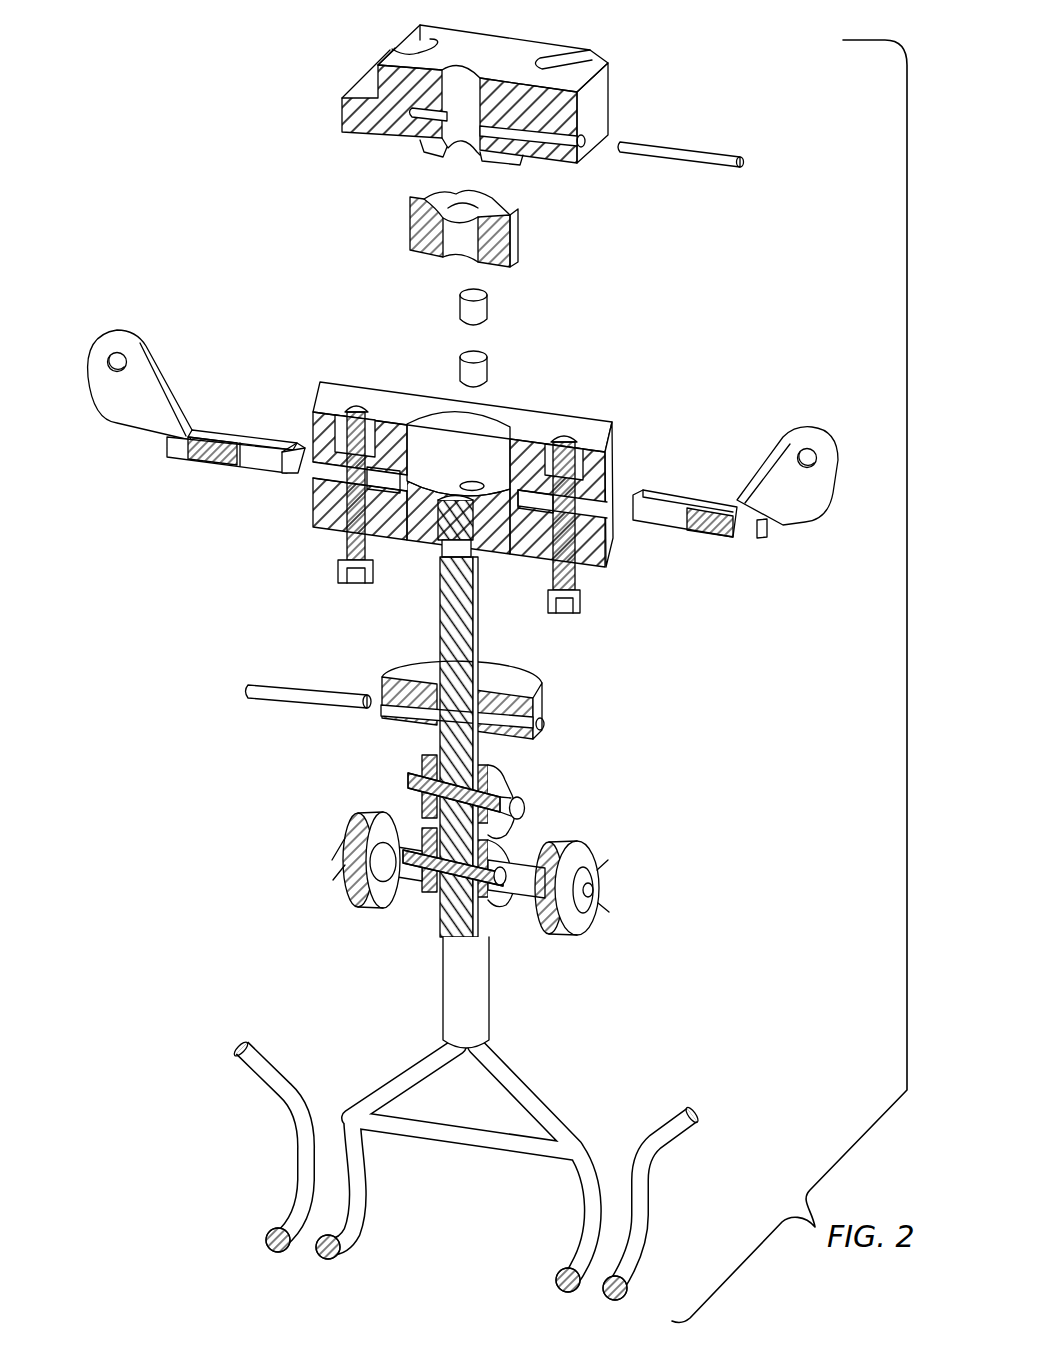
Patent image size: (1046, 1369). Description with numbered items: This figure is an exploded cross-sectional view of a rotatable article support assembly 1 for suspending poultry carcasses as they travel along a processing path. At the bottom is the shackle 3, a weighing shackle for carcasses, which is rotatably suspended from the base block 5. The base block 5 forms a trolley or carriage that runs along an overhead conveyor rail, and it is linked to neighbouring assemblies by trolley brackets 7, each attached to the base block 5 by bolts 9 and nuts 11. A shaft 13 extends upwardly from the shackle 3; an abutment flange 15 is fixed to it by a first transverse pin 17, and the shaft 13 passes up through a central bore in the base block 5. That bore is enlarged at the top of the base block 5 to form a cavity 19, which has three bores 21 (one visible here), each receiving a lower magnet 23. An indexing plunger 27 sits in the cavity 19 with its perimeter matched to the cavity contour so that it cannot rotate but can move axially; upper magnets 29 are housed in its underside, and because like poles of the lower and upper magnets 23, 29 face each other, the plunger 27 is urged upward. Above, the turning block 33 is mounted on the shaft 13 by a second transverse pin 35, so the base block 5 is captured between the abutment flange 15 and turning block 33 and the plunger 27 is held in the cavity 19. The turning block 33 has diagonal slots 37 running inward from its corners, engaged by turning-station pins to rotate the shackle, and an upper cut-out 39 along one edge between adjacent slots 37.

The article support assembly 1 is at (792, 288).
The shackle 3 is at (443, 983).
The base block 5 is at (578, 425).
The trolley bracket 7 is at (138, 334).
The bolt 9 is at (612, 617).
The nut 11 is at (284, 388).
The shaft 13 is at (440, 611).
The abutment flange 15 is at (510, 677).
The first transverse pin 17 is at (310, 705).
The cavity 19 is at (445, 440).
The bore 21 is at (478, 482).
The lower magnet 23 is at (490, 368).
The indexing plunger 27 is at (410, 232).
The upper magnet 29 is at (490, 305).
The turning block 33 is at (515, 50).
The second transverse pin 35 is at (677, 143).
The diagonal slot 37 is at (428, 43).
The upper cut-out 39 is at (365, 87).